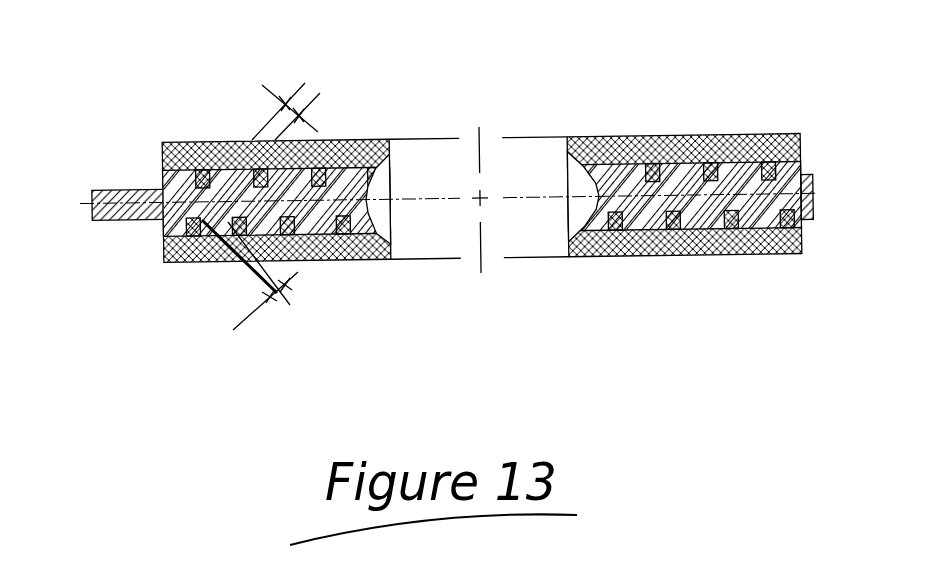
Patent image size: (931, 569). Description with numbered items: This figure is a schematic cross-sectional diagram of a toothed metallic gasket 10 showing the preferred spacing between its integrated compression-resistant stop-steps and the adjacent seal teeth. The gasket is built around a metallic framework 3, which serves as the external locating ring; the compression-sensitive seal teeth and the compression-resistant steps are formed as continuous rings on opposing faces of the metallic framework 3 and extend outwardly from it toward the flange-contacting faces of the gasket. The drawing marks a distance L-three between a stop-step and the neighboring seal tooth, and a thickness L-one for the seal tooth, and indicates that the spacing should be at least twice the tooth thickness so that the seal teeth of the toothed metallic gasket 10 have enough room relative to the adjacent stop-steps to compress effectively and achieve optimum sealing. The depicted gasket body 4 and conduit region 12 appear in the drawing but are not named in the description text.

The toothed metallic gasket 10 is at (105, 60).
The metallic framework 3 is at (115, 221).
The corrugated fitting body 4 is at (713, 255).
The conduit 12 is at (443, 174).